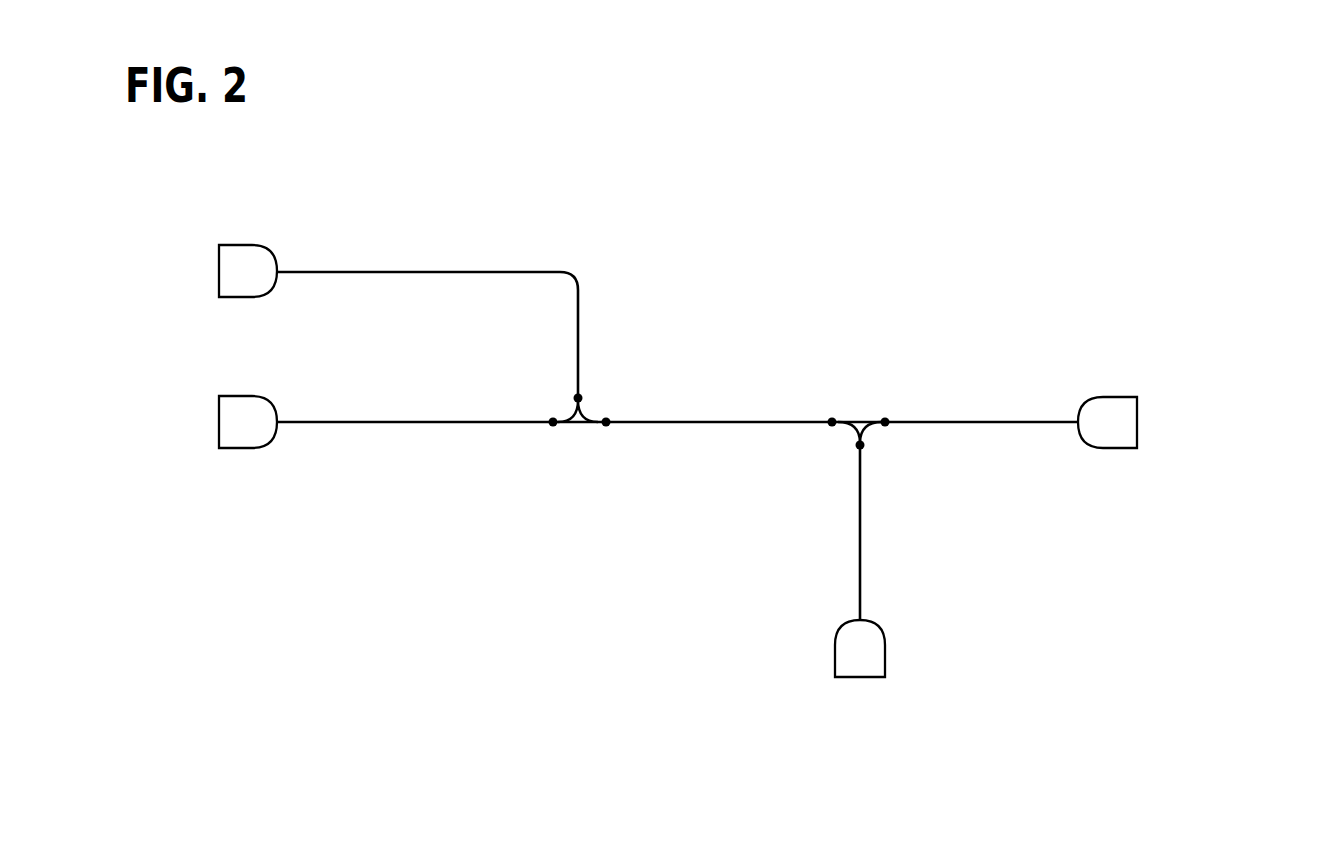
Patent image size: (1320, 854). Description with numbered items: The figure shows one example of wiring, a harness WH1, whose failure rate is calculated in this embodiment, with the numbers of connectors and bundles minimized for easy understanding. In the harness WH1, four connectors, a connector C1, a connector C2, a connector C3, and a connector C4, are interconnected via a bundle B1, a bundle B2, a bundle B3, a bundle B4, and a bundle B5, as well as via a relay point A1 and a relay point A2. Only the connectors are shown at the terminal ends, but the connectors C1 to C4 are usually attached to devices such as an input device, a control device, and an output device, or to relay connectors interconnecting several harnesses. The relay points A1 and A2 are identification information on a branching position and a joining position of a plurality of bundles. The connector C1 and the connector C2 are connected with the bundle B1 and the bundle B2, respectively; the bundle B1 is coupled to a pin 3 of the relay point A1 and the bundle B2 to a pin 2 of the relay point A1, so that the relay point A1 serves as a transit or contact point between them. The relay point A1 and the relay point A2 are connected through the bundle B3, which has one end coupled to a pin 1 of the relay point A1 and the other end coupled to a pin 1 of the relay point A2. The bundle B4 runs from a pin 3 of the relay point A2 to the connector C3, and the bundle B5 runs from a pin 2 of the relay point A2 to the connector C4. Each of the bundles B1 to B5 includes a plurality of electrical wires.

The harness WH1 is at (758, 190).
The connector C1 is at (246, 249).
The connector C2 is at (246, 400).
The connector C3 is at (860, 671).
The connector C4 is at (1180, 422).
The bundle B1 is at (427, 312).
The bundle B2 is at (415, 405).
The bundle B3 is at (719, 407).
The bundle B4 is at (843, 532).
The bundle B5 is at (981, 407).
The relay point A1 is at (579, 481).
The relay point A2 is at (858, 360).
The pin 1 is at (719, 421).
The pin 2 is at (718, 421).
The pin 3 is at (719, 417).